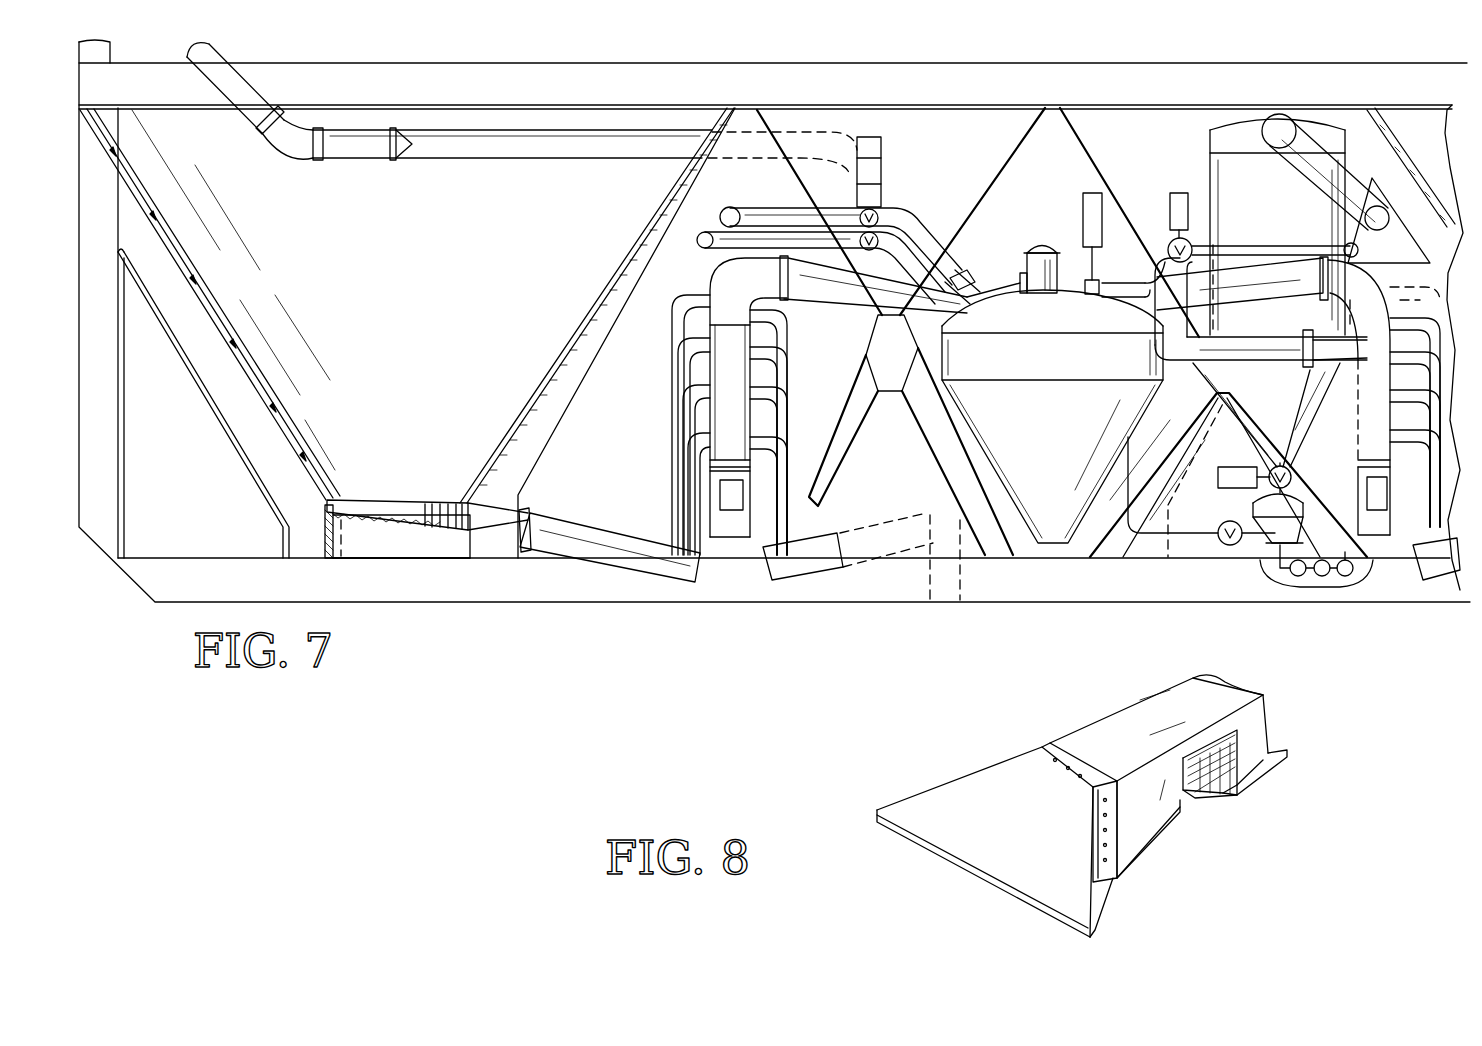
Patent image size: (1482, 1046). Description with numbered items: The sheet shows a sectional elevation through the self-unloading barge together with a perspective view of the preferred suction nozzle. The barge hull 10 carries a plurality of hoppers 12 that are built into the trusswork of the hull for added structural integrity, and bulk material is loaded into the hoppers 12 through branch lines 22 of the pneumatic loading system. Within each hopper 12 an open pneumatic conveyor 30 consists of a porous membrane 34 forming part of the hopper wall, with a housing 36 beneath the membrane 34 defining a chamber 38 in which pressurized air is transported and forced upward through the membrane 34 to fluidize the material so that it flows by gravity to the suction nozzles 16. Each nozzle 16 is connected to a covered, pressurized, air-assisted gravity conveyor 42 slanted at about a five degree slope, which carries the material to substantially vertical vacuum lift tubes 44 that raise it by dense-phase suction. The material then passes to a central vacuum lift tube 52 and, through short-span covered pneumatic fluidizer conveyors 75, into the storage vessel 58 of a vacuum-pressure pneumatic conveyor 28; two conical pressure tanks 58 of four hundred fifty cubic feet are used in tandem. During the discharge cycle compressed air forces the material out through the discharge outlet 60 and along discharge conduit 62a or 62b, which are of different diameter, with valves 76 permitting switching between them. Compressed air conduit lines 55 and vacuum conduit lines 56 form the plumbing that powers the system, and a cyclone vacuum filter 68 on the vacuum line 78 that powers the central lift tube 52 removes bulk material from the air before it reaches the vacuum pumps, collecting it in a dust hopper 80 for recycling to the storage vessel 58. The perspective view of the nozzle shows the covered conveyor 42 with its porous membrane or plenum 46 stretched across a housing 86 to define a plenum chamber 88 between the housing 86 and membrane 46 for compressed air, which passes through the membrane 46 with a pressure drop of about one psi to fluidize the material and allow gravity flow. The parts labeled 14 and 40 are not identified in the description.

In FIG. 7, the barge hull 10 is at (173, 603).
In FIG. 7, the hopper 12 is at (157, 178).
In FIG. 7, the panel 14 is at (203, 393).
In FIG. 7, the suction nozzle 16 is at (498, 512).
In FIG. 8, the suction nozzle 16 is at (1093, 910).
In FIG. 7, the branch line 22 is at (290, 150).
In FIG. 7, the vacuum-pressure pneumatic conveyor 28 is at (1020, 283).
In FIG. 7, the open pneumatic conveyor 30 is at (397, 495).
In FIG. 7, the porous membrane 34 is at (372, 520).
In FIG. 7, the housing 36 is at (380, 560).
In FIG. 7, the chamber 38 is at (406, 548).
In FIG. 8, the flared outlet 40 is at (1045, 908).
In FIG. 7, the covered air-assisted gravity conveyor 42 is at (600, 530).
In FIG. 8, the covered air-assisted gravity conveyor 42 is at (1125, 713).
In FIG. 7, the vacuum lift tube 44 is at (676, 440).
In FIG. 8, the porous membrane or plenum 46 is at (1208, 748).
In FIG. 7, the central vacuum lift tube 52 is at (748, 557).
In FIG. 7, the compressed air conduit line 55 is at (1235, 255).
In FIG. 7, the vacuum conduit line 56 is at (1368, 228).
In FIG. 7, the storage vessel 58 is at (1071, 424).
In FIG. 7, the discharge outlet 60 is at (985, 316).
In FIG. 7, the discharge conduit 62a is at (900, 210).
In FIG. 7, the discharge conduit 62b is at (925, 226).
In FIG. 7, the cyclone vacuum filter 68 is at (1208, 165).
In FIG. 7, the covered pneumatic fluidizer conveyor 75 is at (890, 300).
In FIG. 7, the valve 76 is at (860, 236).
In FIG. 7, the vacuum line 78 is at (1265, 365).
In FIG. 7, the dust hopper 80 is at (1253, 505).
In FIG. 8, the housing 86 is at (1250, 783).
In FIG. 8, the plenum chamber 88 is at (1212, 790).